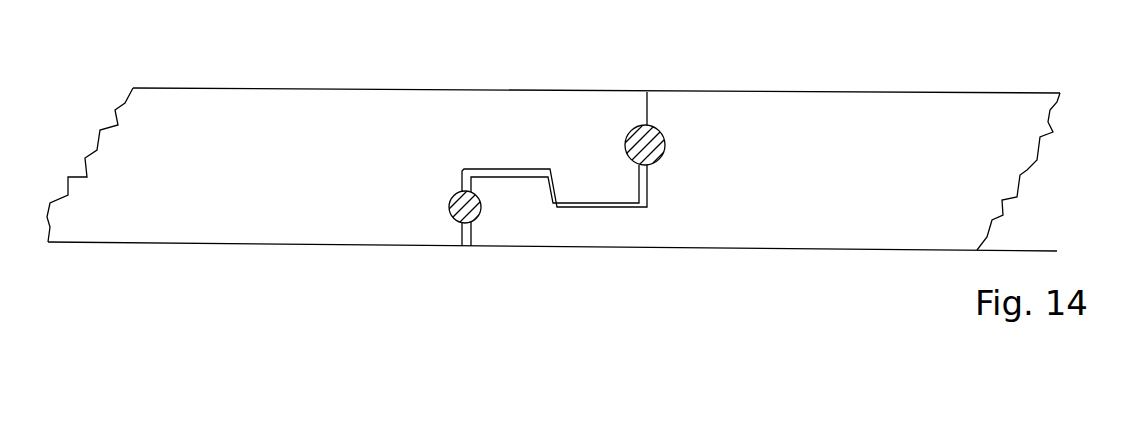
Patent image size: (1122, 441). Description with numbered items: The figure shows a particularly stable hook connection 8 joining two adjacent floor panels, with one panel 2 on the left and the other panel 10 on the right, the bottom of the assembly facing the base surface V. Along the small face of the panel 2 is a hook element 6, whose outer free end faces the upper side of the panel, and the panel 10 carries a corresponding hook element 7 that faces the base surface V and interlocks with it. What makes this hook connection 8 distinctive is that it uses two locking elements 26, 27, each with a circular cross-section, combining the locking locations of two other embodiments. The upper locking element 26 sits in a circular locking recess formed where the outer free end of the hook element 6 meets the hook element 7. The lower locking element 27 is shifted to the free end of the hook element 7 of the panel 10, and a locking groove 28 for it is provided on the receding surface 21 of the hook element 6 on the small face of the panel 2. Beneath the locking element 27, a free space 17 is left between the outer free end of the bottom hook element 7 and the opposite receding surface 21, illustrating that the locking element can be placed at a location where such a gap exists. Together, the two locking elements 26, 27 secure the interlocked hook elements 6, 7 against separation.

The panel 2 is at (233, 153).
The hook element 6 is at (568, 133).
The hook element 7 is at (590, 241).
The hook connection 8 is at (617, 52).
The panel 10 is at (962, 158).
The free space 17 is at (466, 262).
The receding surface 21 is at (470, 232).
The locking element 26 is at (661, 130).
The locking element 27 is at (455, 220).
The locking groove 28 is at (480, 197).
The base surface V is at (1050, 240).